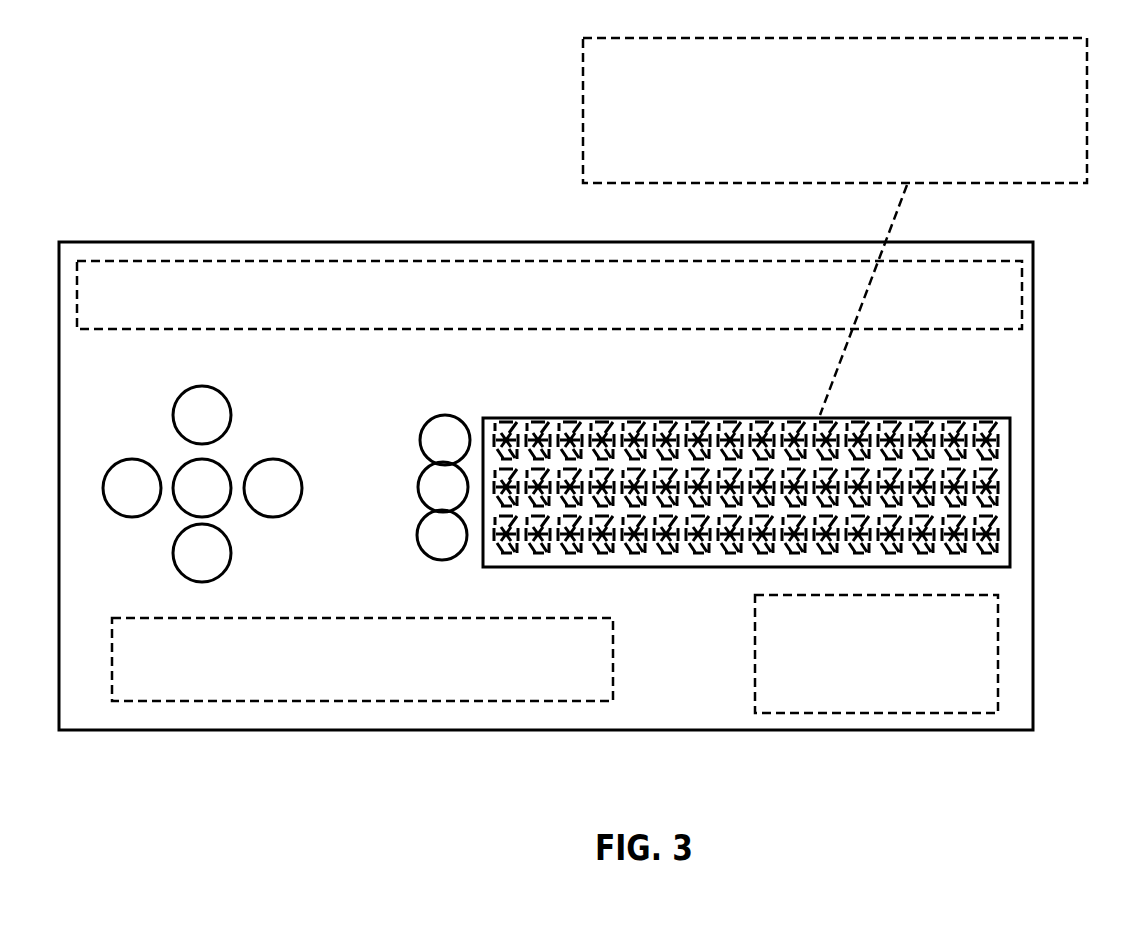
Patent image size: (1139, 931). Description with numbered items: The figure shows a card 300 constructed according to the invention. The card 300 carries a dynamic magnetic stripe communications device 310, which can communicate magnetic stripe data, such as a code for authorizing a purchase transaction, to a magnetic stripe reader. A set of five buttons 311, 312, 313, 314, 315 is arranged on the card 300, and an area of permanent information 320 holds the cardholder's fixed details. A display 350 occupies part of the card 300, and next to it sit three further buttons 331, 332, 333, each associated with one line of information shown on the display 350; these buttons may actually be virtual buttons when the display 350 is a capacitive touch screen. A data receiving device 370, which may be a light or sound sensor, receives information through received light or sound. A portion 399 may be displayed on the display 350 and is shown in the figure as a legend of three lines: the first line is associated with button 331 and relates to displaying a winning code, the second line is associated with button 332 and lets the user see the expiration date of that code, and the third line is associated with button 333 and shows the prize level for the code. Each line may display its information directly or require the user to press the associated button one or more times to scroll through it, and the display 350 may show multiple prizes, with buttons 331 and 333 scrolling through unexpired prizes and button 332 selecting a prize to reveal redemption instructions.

The card 300 is at (588, 486).
The dynamic magnetic stripe communications device 310 is at (143, 329).
The button 311 is at (132, 459).
The button 312 is at (202, 387).
The button 313 is at (197, 459).
The button 314 is at (316, 452).
The button 315 is at (173, 553).
The permanent information 320 is at (112, 655).
The button 331 is at (430, 425).
The button 332 is at (434, 471).
The button 333 is at (428, 520).
The display 350 is at (738, 568).
The data receiving device 370 is at (768, 712).
The portion 399 is at (583, 108).